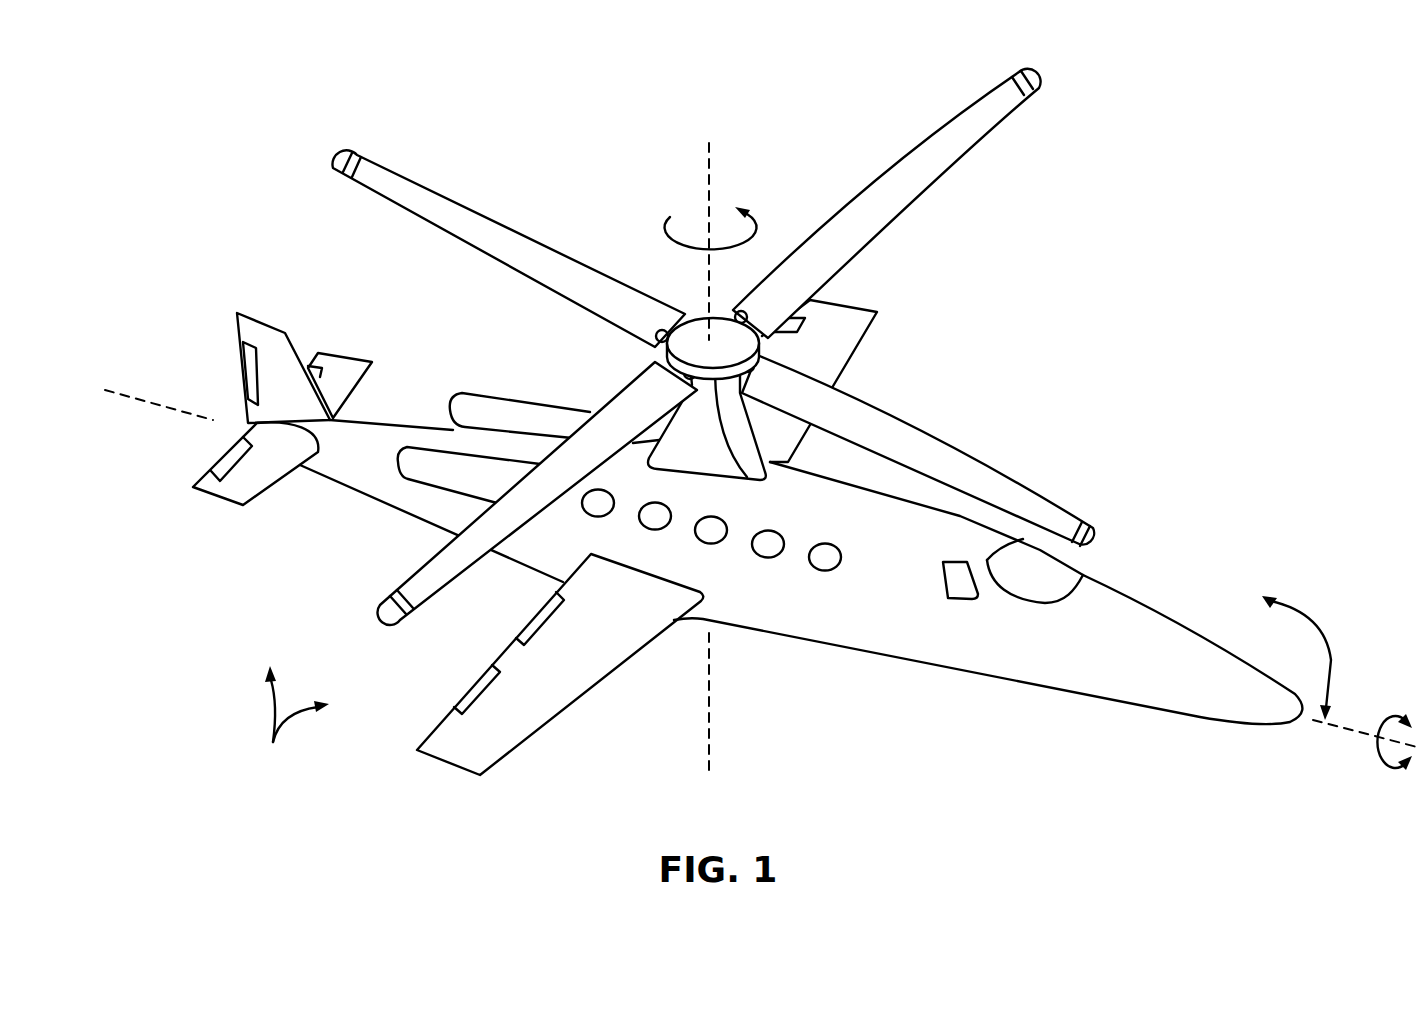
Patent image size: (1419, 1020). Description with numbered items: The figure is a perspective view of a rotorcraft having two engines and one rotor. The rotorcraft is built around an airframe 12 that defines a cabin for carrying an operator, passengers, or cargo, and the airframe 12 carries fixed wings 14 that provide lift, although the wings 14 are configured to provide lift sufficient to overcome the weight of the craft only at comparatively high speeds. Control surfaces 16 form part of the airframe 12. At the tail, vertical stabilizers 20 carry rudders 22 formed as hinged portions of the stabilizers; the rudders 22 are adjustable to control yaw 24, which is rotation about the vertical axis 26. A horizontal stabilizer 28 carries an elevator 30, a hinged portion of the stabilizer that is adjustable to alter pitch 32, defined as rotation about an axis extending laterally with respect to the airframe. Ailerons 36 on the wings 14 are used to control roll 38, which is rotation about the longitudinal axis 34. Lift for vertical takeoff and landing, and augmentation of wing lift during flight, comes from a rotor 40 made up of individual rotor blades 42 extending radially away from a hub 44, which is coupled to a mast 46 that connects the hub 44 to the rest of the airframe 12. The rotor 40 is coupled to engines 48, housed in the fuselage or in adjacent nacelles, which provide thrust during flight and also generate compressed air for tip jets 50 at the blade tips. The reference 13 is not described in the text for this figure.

The airframe 12 is at (878, 643).
The aircraft 13 is at (1116, 320).
The fixed wings 14 is at (550, 702).
The control surfaces 16 is at (290, 721).
The vertical stabilizer 20 is at (262, 332).
The rudder 22 is at (245, 378).
The yaw 24 is at (672, 216).
The vertical axis 26 is at (712, 163).
The horizontal stabilizer 28 is at (258, 474).
The elevator 30 is at (222, 466).
The pitch 32 is at (1322, 648).
The longitudinal axis 34 is at (1352, 727).
The ailerons 36 is at (545, 600).
The roll 38 is at (1387, 770).
The rotor 40 is at (730, 300).
The rotor blades 42 is at (472, 207).
The hub 44 is at (742, 480).
The mast 46 is at (703, 440).
The engines 48 is at (501, 408).
The tip jets 50 is at (340, 153).